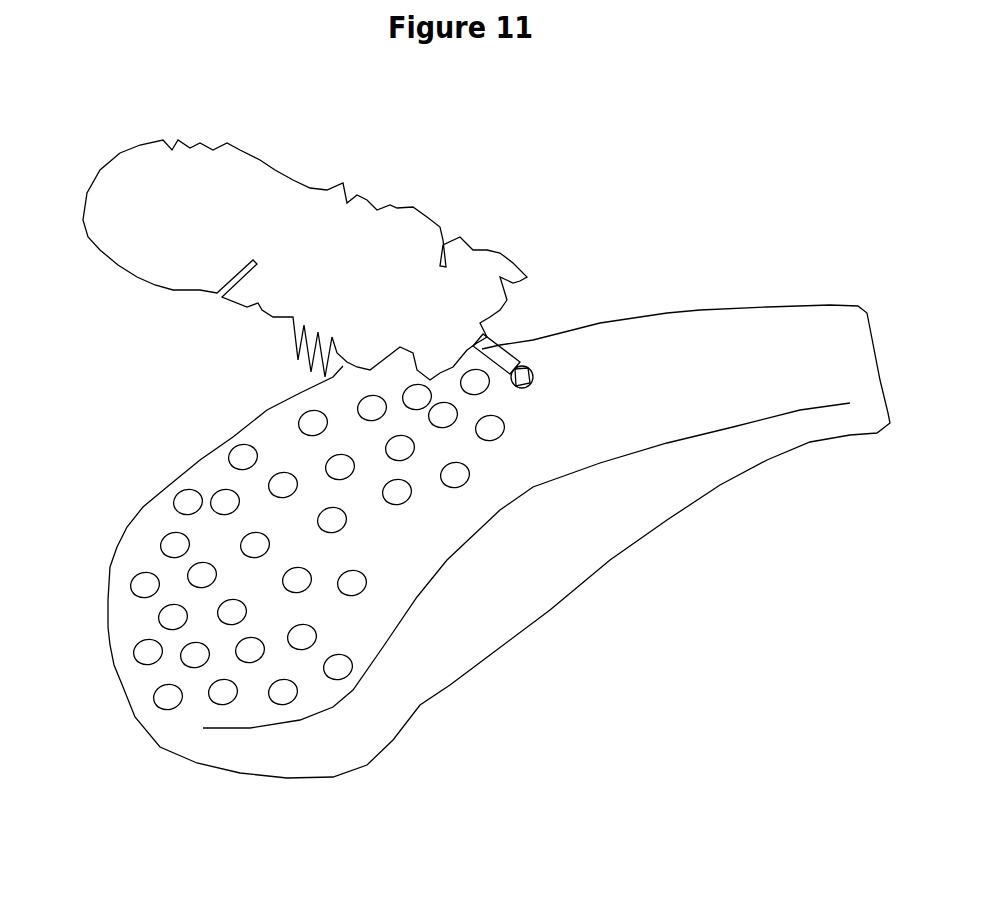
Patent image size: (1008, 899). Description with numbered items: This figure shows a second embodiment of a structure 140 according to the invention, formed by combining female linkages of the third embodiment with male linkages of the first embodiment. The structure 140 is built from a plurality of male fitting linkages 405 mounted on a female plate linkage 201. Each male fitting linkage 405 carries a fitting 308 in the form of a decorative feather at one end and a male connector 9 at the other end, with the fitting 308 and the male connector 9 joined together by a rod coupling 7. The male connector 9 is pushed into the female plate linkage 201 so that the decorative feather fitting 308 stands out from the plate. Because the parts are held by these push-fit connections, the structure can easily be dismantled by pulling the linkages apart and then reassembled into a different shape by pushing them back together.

The structure 140 is at (727, 263).
The female plate linkage 201 is at (665, 485).
The male fitting linkage 405 is at (197, 212).
The fitting 308 is at (305, 200).
The rod coupling 7 is at (487, 337).
The male connector 9 is at (522, 362).